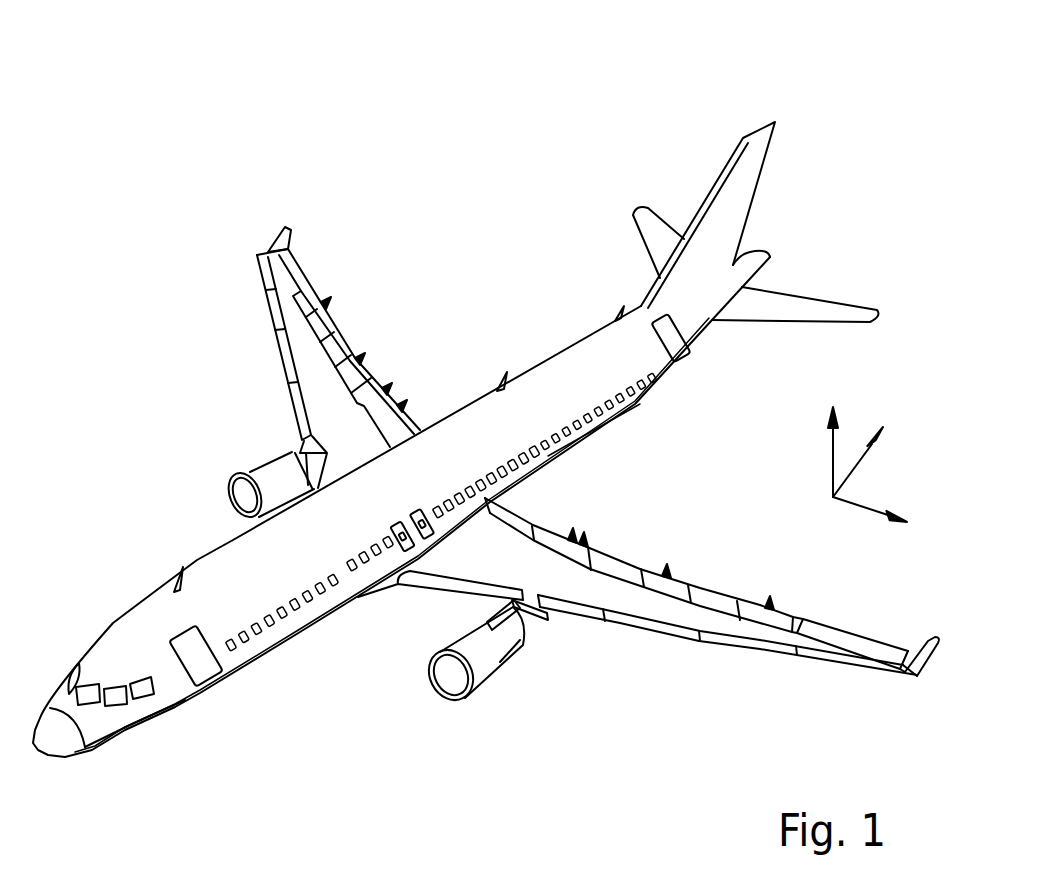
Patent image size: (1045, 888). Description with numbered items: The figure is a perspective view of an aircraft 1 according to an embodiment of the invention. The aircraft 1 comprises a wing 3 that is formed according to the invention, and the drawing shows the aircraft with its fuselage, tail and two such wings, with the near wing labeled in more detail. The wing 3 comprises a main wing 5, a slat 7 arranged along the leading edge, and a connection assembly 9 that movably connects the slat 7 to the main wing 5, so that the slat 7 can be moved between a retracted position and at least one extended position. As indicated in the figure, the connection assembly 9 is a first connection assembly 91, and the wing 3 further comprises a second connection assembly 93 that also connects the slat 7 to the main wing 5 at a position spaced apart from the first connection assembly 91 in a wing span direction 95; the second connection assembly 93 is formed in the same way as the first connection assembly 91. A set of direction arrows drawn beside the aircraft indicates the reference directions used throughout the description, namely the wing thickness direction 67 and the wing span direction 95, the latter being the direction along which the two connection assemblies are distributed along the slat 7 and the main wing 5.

The aircraft 1 is at (486, 388).
The wing 3 is at (598, 477).
The main wing 5 is at (607, 597).
The slat 7 is at (650, 629).
The connection assembly 9 is at (637, 670).
The first connection assembly 91 is at (600, 620).
The second connection assembly 93 is at (700, 641).
The wing thickness direction 67 is at (835, 446).
The wing span direction 95 is at (862, 508).